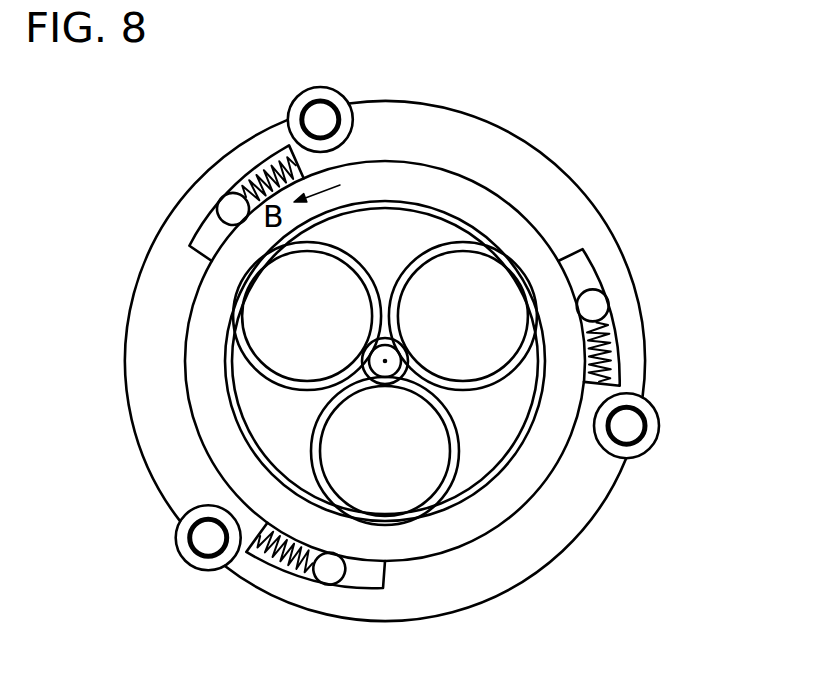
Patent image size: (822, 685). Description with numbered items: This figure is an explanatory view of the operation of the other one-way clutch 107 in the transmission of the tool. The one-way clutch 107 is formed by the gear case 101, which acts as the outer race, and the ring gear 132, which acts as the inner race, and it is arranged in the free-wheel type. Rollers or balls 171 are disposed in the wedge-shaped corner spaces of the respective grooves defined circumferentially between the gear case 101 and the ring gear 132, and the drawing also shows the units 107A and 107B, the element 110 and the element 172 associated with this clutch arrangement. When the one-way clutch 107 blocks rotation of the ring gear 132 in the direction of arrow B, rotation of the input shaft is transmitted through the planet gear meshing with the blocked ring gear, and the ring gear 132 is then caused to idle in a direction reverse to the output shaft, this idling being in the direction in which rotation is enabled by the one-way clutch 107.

The gear case 101 is at (498, 142).
The ring gear 132 is at (530, 473).
The one-way clutch 107 is at (648, 295).
The clutch unit 107A is at (305, 587).
The clutch unit 107B is at (247, 167).
The pocket block 110 is at (585, 265).
The rollers or balls 171 is at (598, 302).
The spring 172 is at (605, 337).